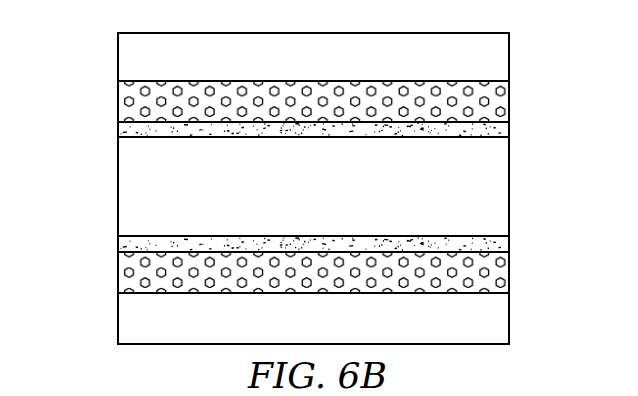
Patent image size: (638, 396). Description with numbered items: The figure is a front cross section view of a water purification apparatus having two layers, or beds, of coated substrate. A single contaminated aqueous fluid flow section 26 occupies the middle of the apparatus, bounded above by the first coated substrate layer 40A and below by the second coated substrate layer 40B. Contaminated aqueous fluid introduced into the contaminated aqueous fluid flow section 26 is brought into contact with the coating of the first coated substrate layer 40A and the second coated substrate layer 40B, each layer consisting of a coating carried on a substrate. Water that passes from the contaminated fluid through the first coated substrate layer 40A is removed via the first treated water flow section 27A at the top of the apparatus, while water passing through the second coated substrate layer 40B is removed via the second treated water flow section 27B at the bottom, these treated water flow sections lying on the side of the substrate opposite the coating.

The contaminated aqueous fluid flow section 26 is at (317, 198).
The first treated water flow section 27A is at (320, 68).
The second treated water flow section 27B is at (320, 330).
The first coated substrate layer 40A is at (306, 111).
The second coated substrate layer 40B is at (306, 263).